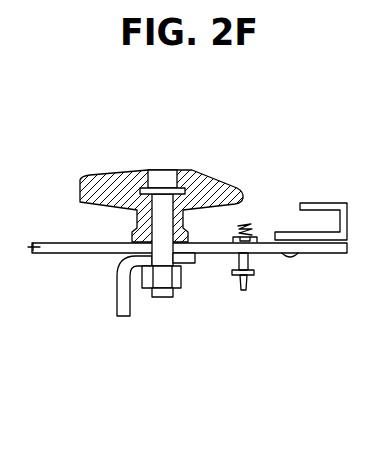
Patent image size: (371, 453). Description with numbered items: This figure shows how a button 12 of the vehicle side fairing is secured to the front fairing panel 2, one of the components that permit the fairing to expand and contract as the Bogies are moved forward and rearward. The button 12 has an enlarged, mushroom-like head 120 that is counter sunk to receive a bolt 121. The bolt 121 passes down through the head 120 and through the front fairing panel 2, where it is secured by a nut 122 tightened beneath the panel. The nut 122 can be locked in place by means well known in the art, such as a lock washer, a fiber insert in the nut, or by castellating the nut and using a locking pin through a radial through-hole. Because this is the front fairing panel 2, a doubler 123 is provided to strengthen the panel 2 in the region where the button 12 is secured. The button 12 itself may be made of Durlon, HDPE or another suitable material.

The front fairing panel 2 is at (318, 249).
The button 12 is at (213, 164).
The head 120 is at (108, 173).
The bolt 121 is at (163, 182).
The nut 122 is at (176, 277).
The doubler 123 is at (122, 277).